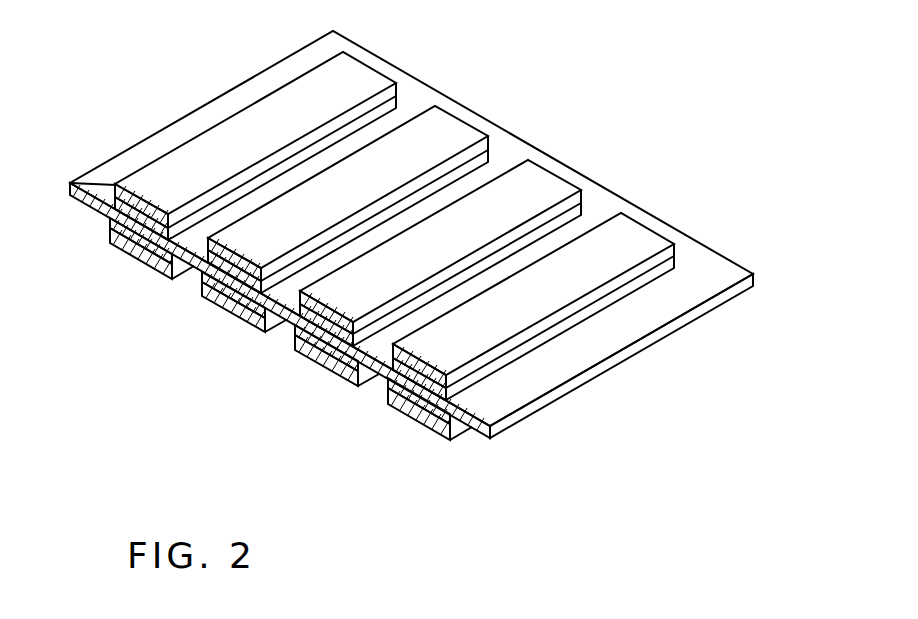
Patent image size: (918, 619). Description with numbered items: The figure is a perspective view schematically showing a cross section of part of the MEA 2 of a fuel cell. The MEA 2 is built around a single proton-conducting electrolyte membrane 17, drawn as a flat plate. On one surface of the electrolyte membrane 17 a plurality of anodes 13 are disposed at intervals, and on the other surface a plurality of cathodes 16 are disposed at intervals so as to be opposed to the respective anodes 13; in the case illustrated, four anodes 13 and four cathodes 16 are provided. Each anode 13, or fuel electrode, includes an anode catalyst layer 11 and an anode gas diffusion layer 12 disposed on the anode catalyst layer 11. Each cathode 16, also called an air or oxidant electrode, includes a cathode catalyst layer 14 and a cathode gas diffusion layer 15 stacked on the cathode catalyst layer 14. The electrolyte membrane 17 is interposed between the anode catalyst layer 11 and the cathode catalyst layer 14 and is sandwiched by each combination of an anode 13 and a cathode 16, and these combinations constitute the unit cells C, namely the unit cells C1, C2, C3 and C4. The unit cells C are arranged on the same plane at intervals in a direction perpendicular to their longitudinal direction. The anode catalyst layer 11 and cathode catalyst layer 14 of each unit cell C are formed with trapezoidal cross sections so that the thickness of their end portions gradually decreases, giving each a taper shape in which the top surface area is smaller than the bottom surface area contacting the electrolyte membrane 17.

The MEA 2 is at (755, 212).
The anode catalyst layer 11 is at (425, 425).
The anode gas diffusion layer 12 is at (446, 432).
The anode 13 is at (430, 450).
The cathode catalyst layer 14 is at (110, 206).
The cathode gas diffusion layer 15 is at (135, 200).
The cathode 16 is at (243, 145).
The electrolyte membrane 17 is at (603, 363).
The unit cells C is at (409, 261).
The first unit cell C1 is at (386, 62).
The second unit cell C2 is at (476, 112).
The third unit cell C3 is at (568, 167).
The fourth unit cell C4 is at (660, 217).